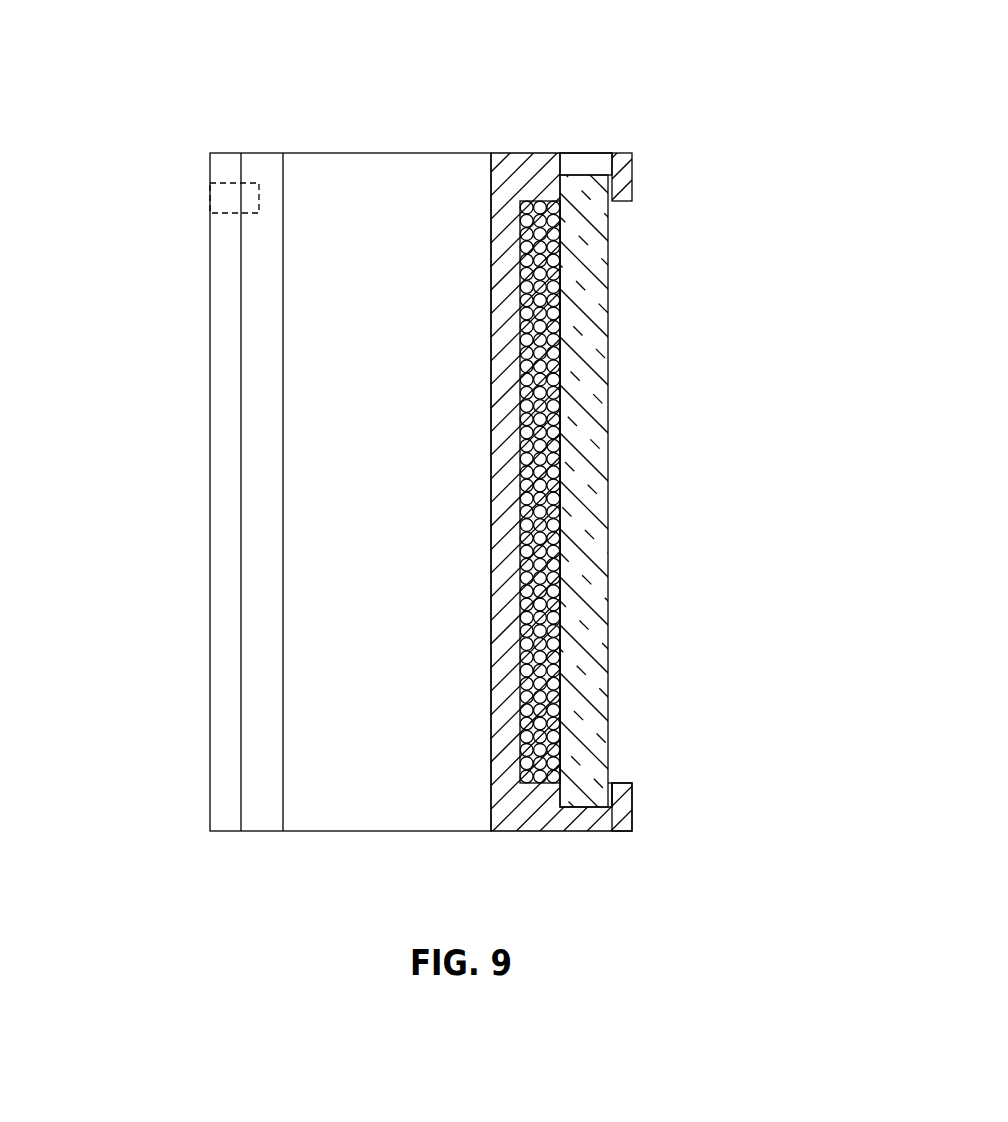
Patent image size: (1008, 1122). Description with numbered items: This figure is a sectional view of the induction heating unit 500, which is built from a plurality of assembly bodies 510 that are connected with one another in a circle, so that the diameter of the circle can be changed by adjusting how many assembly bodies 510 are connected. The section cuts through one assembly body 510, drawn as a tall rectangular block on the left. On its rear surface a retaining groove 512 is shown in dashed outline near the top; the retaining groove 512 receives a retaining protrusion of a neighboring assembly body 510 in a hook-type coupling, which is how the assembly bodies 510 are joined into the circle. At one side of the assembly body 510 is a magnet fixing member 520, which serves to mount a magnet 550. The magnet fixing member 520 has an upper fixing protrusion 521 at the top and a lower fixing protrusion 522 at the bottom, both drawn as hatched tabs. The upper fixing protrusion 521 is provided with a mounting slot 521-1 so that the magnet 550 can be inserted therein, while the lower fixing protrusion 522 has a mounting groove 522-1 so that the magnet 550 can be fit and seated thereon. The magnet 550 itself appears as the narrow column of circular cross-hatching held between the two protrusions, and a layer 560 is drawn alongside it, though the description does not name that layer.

The induction heating unit 500 is at (403, 428).
The assembly body 510 is at (504, 478).
The retaining groove 512 is at (233, 200).
The magnet fixing member 520 is at (719, 459).
The upper fixing protrusion 521 is at (627, 175).
The mounting slot 521-1 is at (587, 157).
The lower fixing protrusion 522 is at (627, 800).
The mounting groove 522-1 is at (611, 784).
The magnet 550 is at (525, 285).
The heat conductive pad 560 is at (607, 336).